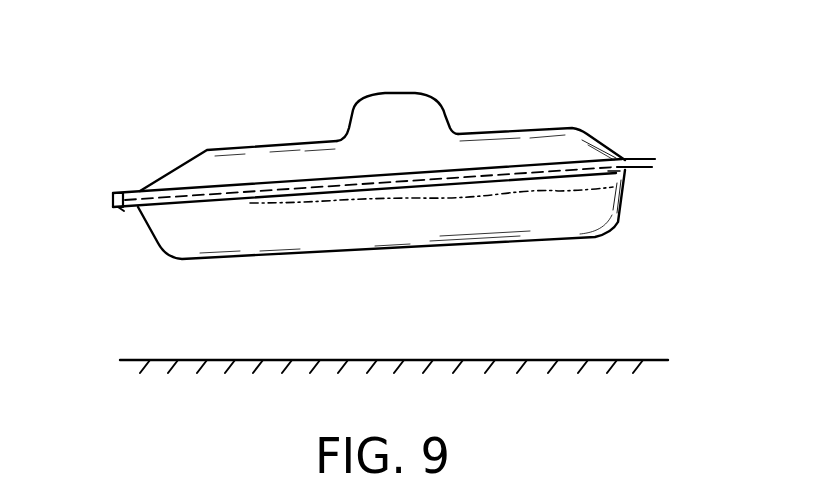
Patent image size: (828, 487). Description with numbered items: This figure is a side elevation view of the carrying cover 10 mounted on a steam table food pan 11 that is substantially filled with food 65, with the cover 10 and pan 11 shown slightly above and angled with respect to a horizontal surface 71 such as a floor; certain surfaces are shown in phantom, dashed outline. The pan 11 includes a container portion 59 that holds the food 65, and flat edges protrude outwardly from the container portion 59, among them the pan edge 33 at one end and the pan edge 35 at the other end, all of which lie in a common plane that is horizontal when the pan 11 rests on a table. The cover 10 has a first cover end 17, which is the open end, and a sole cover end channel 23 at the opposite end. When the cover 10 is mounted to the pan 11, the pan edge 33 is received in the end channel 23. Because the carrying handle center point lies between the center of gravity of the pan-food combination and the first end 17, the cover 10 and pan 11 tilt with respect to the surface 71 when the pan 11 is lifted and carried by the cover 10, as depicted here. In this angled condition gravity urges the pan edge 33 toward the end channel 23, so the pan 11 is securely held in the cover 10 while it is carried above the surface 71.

The carrying cover 10 is at (233, 147).
The food pan 11 is at (618, 208).
The first cover end 17 is at (643, 158).
The end channel 23 is at (116, 199).
The pan edge 33 is at (120, 206).
The pan edge 35 is at (608, 171).
The container portion 59 is at (455, 220).
The food 65 is at (384, 200).
The surface 71 is at (596, 360).